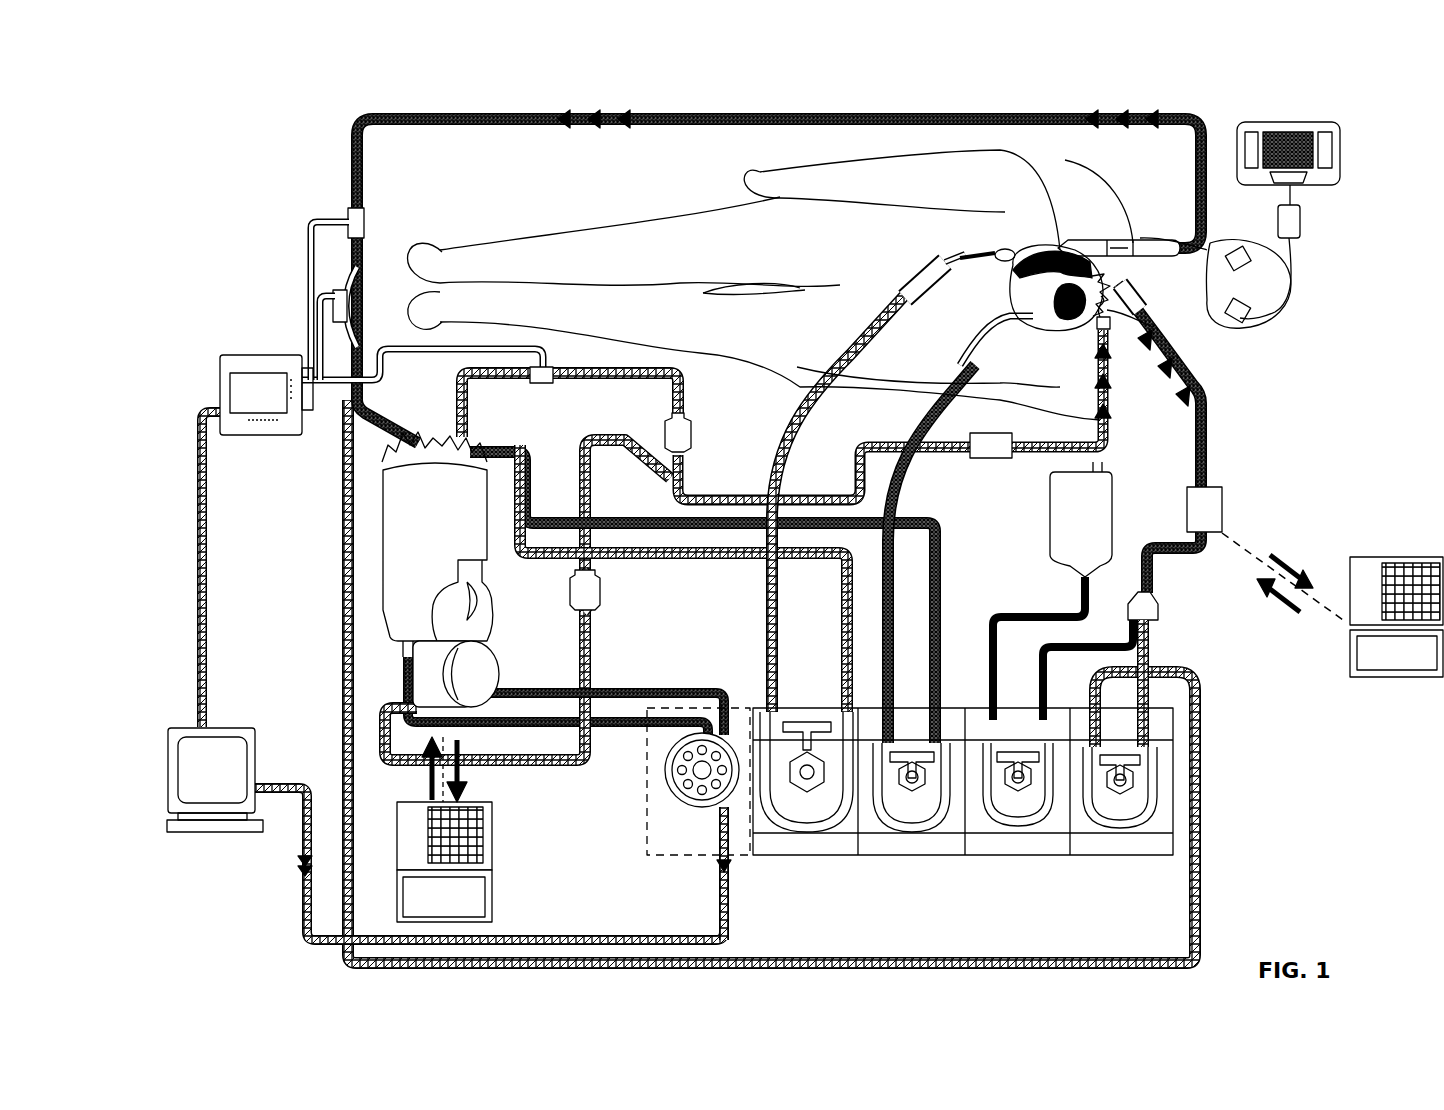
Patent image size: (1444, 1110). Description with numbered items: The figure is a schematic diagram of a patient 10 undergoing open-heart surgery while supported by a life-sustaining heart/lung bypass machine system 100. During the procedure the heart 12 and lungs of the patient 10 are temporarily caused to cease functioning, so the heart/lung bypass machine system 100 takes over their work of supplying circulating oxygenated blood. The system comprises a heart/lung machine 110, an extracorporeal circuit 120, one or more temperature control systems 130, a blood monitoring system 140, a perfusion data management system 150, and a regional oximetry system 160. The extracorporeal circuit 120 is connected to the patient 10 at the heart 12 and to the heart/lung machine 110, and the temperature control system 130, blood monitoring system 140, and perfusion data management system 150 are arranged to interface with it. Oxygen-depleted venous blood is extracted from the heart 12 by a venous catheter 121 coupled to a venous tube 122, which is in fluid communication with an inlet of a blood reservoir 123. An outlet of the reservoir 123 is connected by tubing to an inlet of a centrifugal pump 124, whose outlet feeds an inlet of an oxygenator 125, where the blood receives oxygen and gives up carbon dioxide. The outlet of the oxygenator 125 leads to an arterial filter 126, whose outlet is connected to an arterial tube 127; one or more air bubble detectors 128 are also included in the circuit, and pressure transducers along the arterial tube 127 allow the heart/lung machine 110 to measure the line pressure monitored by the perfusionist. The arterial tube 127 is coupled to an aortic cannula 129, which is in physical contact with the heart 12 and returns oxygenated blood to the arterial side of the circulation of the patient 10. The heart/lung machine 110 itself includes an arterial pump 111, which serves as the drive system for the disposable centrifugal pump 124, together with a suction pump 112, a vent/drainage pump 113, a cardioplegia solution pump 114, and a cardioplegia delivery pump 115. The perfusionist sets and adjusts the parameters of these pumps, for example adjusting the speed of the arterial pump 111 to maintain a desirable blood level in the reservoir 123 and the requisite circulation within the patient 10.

The patient 10 is at (720, 215).
The heart 12 is at (1040, 250).
The heart/lung bypass machine system 100 is at (237, 185).
The heart/lung machine 110 is at (1126, 880).
The arterial pump 111 is at (725, 862).
The suction pump 112 is at (797, 857).
The vent/drainage pump 113 is at (903, 857).
The cardioplegia solution pump 114 is at (1012, 857).
The cardioplegia delivery pump 115 is at (1143, 856).
The extracorporeal circuit 120 is at (345, 183).
The venous catheter 121 is at (1165, 238).
The venous tube 122 is at (448, 127).
The blood reservoir 123 is at (437, 544).
The centrifugal pump 124 is at (700, 808).
The oxygenator 125 is at (518, 648).
The arterial filter 126 is at (665, 415).
The arterial tube 127 is at (860, 477).
The air bubble detector 128 is at (1000, 460).
The aortic cannula 129 is at (1120, 290).
The temperature control system 130 is at (494, 845).
The blood monitoring system 140 is at (219, 375).
The perfusion data management system 150 is at (166, 729).
The regional oximetry system 160 is at (1336, 144).